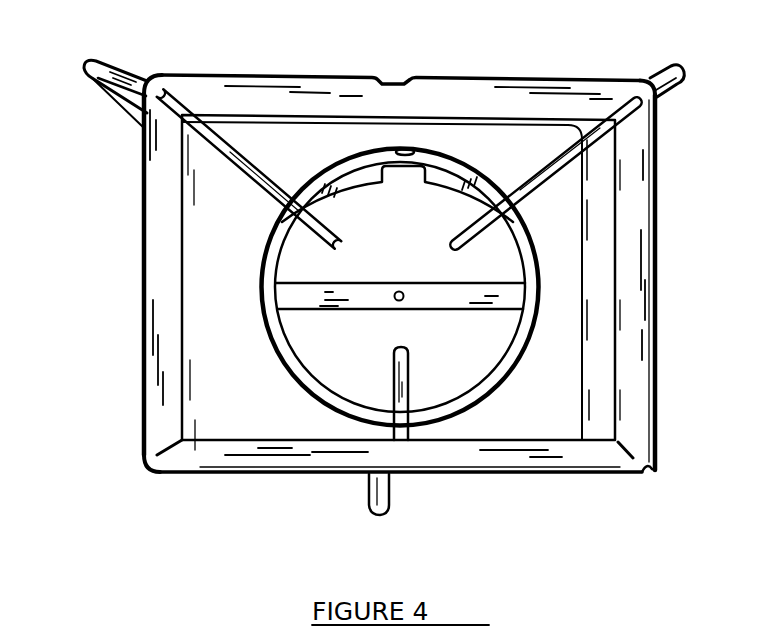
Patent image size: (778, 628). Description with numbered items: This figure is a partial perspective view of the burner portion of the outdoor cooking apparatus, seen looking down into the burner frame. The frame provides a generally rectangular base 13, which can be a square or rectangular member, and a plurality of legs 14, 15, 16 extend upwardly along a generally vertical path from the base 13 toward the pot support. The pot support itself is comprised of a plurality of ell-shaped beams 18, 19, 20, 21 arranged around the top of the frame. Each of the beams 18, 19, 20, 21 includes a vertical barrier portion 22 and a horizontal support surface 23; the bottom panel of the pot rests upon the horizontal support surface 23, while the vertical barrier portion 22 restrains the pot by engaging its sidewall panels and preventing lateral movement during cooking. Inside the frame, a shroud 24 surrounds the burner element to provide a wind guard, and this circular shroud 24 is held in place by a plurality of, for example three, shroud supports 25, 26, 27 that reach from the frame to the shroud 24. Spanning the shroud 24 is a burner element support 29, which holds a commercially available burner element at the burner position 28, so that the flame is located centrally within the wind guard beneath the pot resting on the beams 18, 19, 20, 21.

The base 13 is at (567, 132).
The leg 14 is at (680, 66).
The leg 15 is at (381, 508).
The leg 16 is at (103, 95).
The ell-shaped beam 18 is at (477, 76).
The ell-shaped beam 19 is at (666, 290).
The ell-shaped beam 20 is at (540, 476).
The ell-shaped beam 21 is at (140, 380).
The vertical barrier portion 22 is at (312, 76).
The horizontal support surface 23 is at (172, 175).
The shroud 24 is at (345, 405).
The shroud support 25 is at (407, 392).
The shroud support 26 is at (331, 225).
The shroud support 27 is at (452, 241).
The burner position 28 is at (403, 301).
The burner element support 29 is at (453, 293).